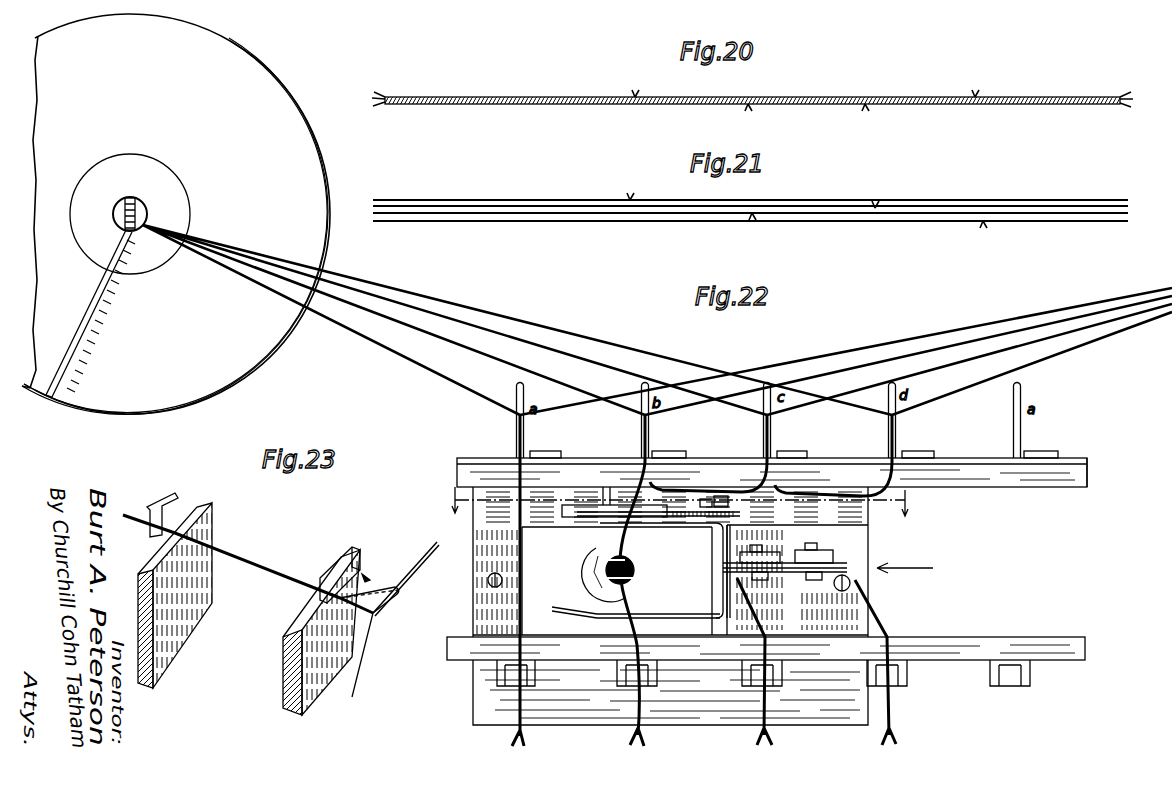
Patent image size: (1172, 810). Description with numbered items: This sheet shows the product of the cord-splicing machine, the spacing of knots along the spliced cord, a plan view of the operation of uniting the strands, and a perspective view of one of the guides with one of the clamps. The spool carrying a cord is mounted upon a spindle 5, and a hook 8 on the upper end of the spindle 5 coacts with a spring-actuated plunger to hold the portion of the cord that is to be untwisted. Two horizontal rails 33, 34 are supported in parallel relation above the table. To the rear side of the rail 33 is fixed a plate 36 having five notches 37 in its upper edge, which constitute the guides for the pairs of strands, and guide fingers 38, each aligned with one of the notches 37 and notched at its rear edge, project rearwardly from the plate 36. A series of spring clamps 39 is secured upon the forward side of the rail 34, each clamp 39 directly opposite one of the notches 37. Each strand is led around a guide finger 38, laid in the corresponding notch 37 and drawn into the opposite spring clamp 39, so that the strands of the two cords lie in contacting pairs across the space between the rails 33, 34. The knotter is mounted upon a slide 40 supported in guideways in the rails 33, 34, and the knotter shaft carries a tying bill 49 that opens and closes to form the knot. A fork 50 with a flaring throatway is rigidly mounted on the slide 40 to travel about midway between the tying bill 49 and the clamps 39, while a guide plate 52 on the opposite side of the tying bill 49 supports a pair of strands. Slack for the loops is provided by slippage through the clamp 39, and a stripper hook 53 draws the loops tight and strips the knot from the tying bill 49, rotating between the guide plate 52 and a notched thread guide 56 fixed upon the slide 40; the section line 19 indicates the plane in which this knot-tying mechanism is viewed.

In FIG. 22, the spindle 5 is at (176, 214).
In FIG. 22, the hook 8 is at (118, 213).
In FIG. 22, the section line 19— 19 is at (676, 501).
In FIG. 22, the rail 33 is at (1068, 481).
In FIG. 23, the rail 33 is at (343, 557).
In FIG. 22, the rail 34 is at (1066, 640).
In FIG. 23, the rail 34 is at (205, 518).
In FIG. 22, the plate 36 is at (468, 456).
In FIG. 23, the plate 36 is at (300, 662).
In FIG. 22, the notches 37 is at (516, 459).
In FIG. 23, the notches 37 is at (345, 588).
In FIG. 22, the guide fingers 38 is at (516, 386).
In FIG. 23, the guide fingers 38 is at (396, 590).
In FIG. 22, the spring clamps 39 is at (514, 684).
In FIG. 23, the spring clamps 39 is at (159, 506).
In FIG. 22, the slide 40 is at (870, 558).
In FIG. 22, the tying bill 49 is at (596, 580).
In FIG. 22, the fork 50 is at (572, 612).
In FIG. 22, the guide plate 52 is at (637, 523).
In FIG. 22, the stripper hook 53 is at (583, 518).
In FIG. 22, the notched thread guide 56 is at (606, 503).